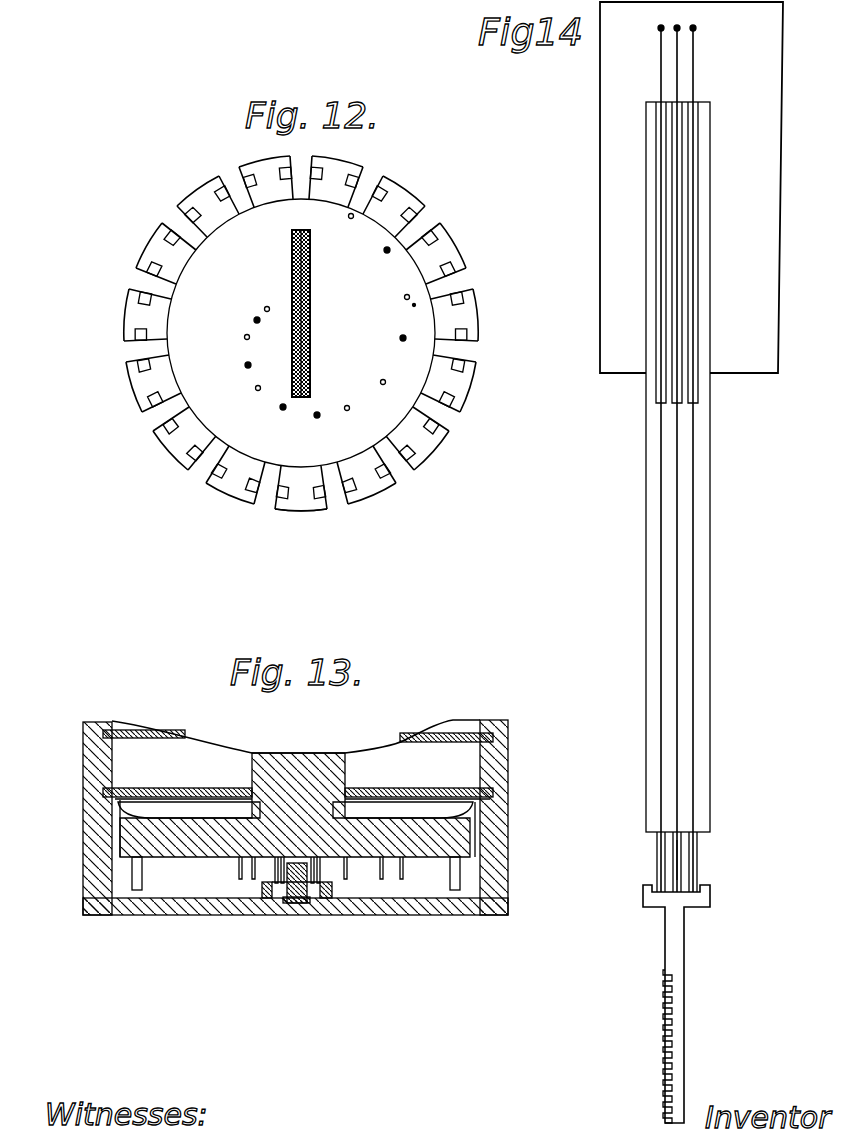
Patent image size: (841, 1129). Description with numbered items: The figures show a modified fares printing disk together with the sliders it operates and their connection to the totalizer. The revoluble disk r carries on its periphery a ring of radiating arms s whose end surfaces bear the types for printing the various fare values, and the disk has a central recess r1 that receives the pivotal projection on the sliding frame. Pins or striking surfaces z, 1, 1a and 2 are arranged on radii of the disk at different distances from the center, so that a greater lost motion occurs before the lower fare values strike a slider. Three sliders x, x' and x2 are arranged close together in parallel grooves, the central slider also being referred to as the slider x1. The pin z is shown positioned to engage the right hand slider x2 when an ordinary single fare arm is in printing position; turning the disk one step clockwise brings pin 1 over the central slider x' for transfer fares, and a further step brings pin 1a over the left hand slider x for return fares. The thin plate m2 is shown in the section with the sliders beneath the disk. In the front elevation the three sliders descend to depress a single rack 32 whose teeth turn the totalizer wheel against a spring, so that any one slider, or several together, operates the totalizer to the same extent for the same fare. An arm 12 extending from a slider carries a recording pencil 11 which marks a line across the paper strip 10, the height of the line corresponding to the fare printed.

In FIG. 12, the revoluble disk r is at (243, 176).
In FIG. 13, the revoluble disk r is at (413, 848).
In FIG. 12, the central recess r1 is at (302, 231).
In FIG. 12, the striking surface 2 is at (349, 216).
In FIG. 12, the right hand slider x2 is at (310, 232).
In FIG. 13, the right hand slider x2 is at (322, 899).
In FIG. 12, the pin 1a is at (266, 308).
In FIG. 12, the striking surface 1 is at (290, 303).
In FIG. 12, the striking surface z is at (312, 310).
In FIG. 12, the arms s is at (310, 506).
In FIG. 13, the membrane plate m2 is at (103, 731).
In FIG. 13, the slider x is at (238, 918).
In FIG. 14, the slider x is at (672, 612).
In FIG. 13, the central slider x1 is at (293, 904).
In FIG. 14, the recording pencil 11 is at (697, 28).
In FIG. 14, the arm 12 is at (700, 90).
In FIG. 14, the paper strip 10 is at (752, 362).
In FIG. 14, the central slider x' is at (707, 856).
In FIG. 14, the rack 32 is at (672, 1040).